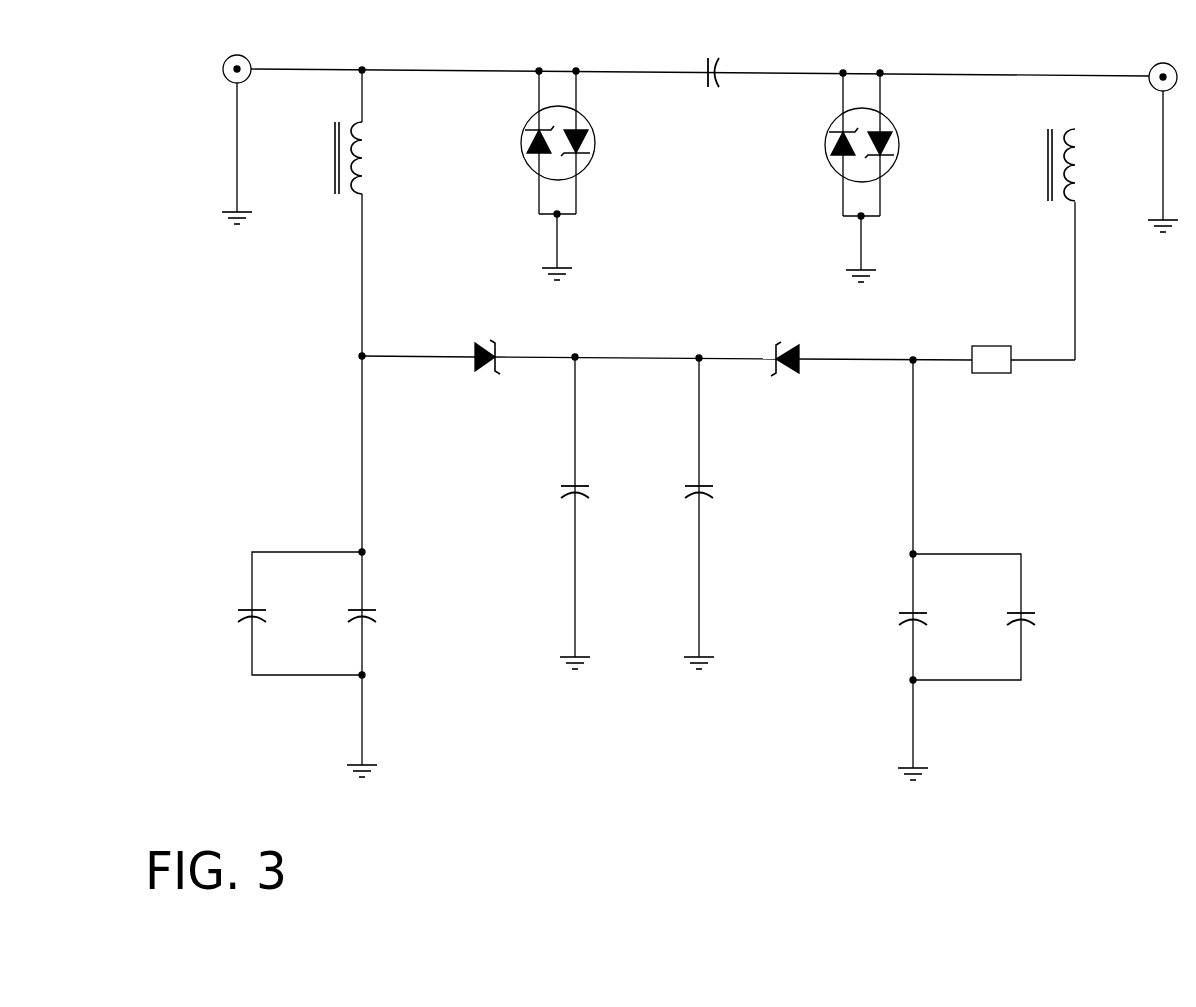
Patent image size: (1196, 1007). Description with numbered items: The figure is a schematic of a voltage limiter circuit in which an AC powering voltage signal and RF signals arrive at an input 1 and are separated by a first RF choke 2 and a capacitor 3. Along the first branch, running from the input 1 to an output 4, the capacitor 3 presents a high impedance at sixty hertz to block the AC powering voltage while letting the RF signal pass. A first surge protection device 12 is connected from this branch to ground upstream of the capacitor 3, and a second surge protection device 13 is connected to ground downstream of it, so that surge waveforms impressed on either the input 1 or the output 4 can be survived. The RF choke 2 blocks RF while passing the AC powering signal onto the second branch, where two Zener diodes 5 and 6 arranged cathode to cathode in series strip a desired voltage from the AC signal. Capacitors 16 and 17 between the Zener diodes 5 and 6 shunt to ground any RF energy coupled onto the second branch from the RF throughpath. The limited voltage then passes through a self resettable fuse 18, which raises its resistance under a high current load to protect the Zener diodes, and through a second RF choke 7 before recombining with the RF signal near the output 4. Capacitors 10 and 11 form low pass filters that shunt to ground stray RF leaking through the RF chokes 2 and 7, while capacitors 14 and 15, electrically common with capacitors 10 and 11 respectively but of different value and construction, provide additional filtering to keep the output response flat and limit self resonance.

The input 1 is at (220, 138).
The first RF choke 2 is at (332, 158).
The capacitor 3 is at (713, 55).
The output 4 is at (1163, 128).
The Zener diode 5 is at (484, 341).
The Zener diode 6 is at (786, 381).
The second RF choke 7 is at (1044, 165).
The capacitor 10 is at (385, 619).
The capacitor 11 is at (935, 621).
The first surge protection device 12 is at (558, 153).
The second surge protection device 13 is at (862, 155).
The capacitor 14 is at (300, 613).
The capacitor 15 is at (998, 617).
The capacitor 16 is at (597, 513).
The capacitor 17 is at (725, 513).
The self resettable fuse 18 is at (992, 383).